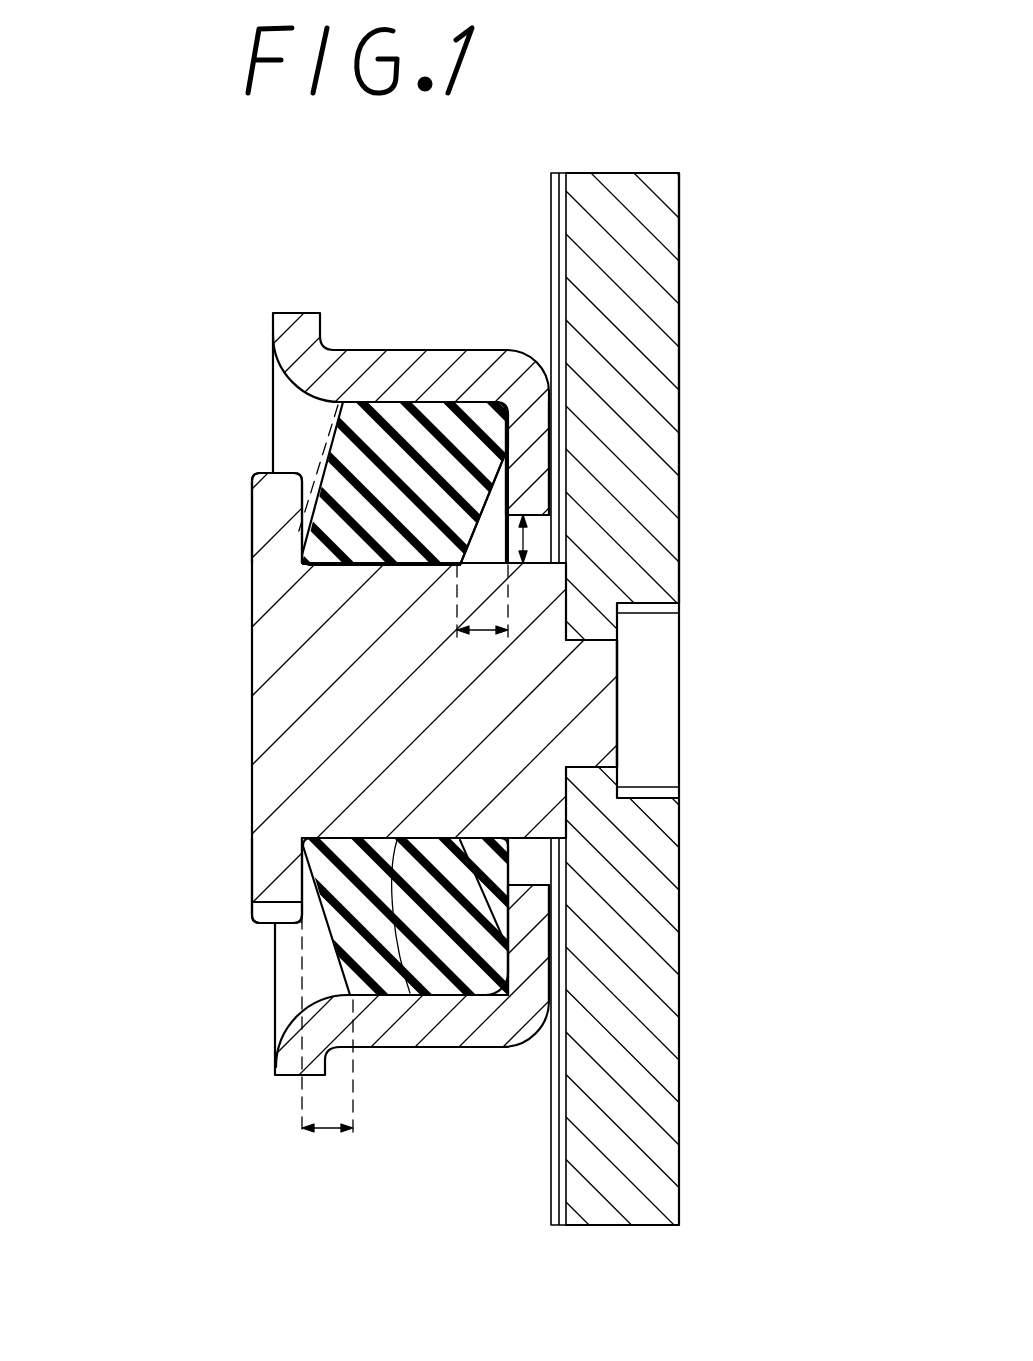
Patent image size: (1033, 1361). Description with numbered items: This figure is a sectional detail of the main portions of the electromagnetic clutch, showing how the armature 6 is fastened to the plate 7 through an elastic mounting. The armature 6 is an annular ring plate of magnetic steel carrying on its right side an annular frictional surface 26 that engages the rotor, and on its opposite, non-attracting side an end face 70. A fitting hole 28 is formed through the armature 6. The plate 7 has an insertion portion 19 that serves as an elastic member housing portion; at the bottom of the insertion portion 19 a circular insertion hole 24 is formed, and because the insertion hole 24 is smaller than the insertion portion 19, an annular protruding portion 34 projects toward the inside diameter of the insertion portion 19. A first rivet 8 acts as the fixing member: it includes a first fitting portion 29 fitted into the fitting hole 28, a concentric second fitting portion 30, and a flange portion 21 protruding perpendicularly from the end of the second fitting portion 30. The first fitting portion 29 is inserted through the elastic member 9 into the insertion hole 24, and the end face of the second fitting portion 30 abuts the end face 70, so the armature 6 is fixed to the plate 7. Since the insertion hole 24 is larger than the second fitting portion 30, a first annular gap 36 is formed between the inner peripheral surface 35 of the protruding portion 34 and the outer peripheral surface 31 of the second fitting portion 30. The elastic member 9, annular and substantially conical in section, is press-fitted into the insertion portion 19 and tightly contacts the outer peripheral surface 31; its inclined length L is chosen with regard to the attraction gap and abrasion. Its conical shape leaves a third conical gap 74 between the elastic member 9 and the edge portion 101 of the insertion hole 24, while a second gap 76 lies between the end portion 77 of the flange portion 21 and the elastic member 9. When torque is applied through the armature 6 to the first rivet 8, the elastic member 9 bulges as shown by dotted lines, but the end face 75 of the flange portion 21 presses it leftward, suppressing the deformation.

The armature 6 is at (665, 583).
The plate 7 is at (432, 1016).
The first rivet 8 is at (410, 489).
The elastic member 9 is at (398, 409).
The insertion portion 19 is at (410, 392).
The flange portion 21 is at (272, 524).
The insertion hole 24 is at (558, 842).
The frictional surface 26 is at (679, 260).
The fitting hole 28 is at (582, 762).
The first fitting portion 29 is at (617, 660).
The second fitting portion 30 is at (516, 740).
The outer peripheral surface 31 is at (408, 998).
The annular protruding portion 34 is at (538, 443).
The inner peripheral surface 35 is at (535, 866).
The first annular ring shaped gap 36 is at (523, 542).
The end face 70 is at (552, 349).
The third annular conical gap 74 is at (492, 505).
The end face of flange portion 75 is at (300, 862).
The second gap 76 is at (262, 920).
The end portion of flange portion 77 is at (280, 472).
The edge portion 101 is at (510, 947).